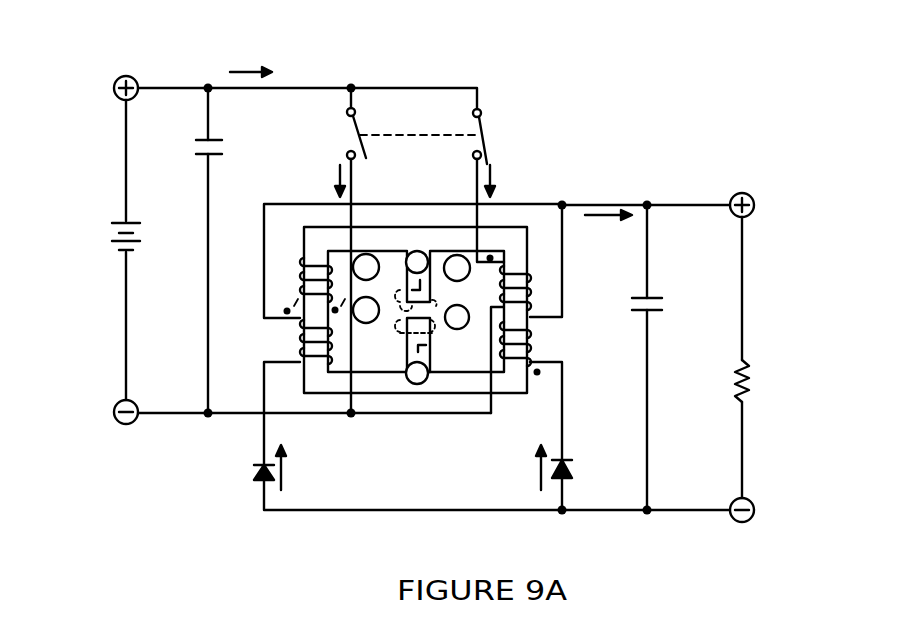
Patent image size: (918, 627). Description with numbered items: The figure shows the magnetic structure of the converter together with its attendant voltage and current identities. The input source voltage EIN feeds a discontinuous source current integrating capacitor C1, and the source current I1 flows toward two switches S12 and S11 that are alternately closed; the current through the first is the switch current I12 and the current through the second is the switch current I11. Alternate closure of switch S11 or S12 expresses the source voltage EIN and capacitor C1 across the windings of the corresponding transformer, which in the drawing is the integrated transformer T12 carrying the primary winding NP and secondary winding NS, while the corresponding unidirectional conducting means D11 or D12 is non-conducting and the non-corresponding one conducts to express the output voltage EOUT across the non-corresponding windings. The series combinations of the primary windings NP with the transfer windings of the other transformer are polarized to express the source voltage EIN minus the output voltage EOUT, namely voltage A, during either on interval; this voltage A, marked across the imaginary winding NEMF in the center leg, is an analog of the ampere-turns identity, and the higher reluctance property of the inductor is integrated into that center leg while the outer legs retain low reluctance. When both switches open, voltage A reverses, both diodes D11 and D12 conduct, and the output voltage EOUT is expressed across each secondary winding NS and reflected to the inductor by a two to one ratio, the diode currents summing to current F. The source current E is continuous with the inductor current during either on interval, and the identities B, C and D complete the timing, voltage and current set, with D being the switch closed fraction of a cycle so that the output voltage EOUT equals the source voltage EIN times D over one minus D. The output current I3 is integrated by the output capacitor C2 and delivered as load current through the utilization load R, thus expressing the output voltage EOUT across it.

The input source voltage EIN is at (93, 247).
The discontinuous source current integrating capacitor C1 is at (193, 149).
The output integrating capacitor C2 is at (629, 310).
The switch S12 is at (395, 133).
The switch S11 is at (501, 136).
The source current I1 is at (251, 63).
The switch current of S12 I12 is at (323, 181).
The switch current of S11 I11 is at (506, 181).
The output current I3 is at (607, 227).
The unidirectional conducting means D12 is at (316, 456).
The unidirectional conducting means D11 is at (428, 456).
The utilization load R is at (706, 389).
The output voltage EOUT is at (776, 385).
The primary winding NP is at (415, 284).
The secondary winding NS is at (414, 343).
The imaginary winding NEMF is at (438, 312).
The transformer T12 is at (410, 240).
The voltage A is at (417, 262).
The voltage identity B is at (417, 373).
The voltage identity C is at (457, 268).
The switch closed period fraction D is at (457, 317).
The source current identity E is at (366, 267).
The summed diode current F is at (366, 310).